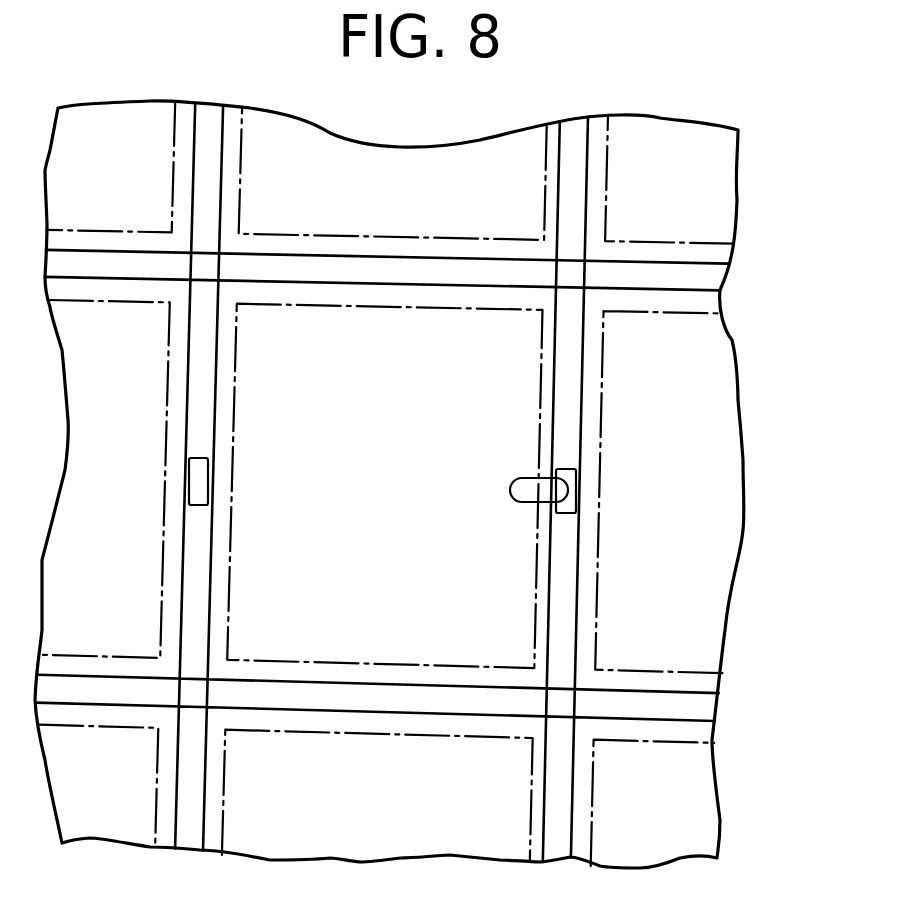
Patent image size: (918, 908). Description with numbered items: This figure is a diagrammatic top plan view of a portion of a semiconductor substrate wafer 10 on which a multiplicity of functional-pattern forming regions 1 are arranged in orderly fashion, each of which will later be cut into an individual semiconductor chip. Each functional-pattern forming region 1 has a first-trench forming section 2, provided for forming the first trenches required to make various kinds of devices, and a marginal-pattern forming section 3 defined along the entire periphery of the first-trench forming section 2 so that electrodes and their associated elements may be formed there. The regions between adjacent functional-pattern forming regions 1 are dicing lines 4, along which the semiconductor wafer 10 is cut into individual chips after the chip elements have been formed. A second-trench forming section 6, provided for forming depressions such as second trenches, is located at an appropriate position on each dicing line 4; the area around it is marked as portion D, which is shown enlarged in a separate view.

The functional-pattern forming region 1 is at (382, 483).
The first-trench forming section 2 is at (437, 348).
The marginal-pattern forming section 3 is at (386, 484).
The dicing line 4 is at (275, 272).
The second-trench forming section 6 is at (558, 470).
The semiconductor substrate wafer 10 is at (742, 412).
The portion D is at (510, 490).